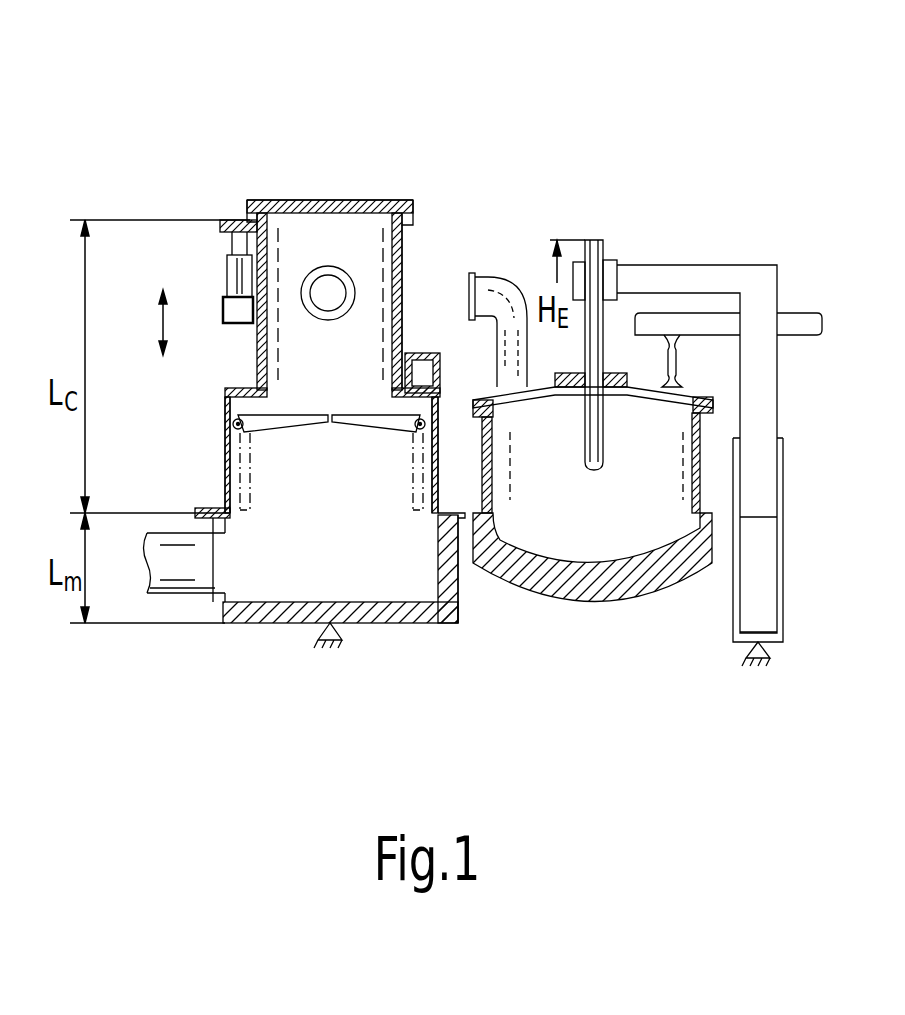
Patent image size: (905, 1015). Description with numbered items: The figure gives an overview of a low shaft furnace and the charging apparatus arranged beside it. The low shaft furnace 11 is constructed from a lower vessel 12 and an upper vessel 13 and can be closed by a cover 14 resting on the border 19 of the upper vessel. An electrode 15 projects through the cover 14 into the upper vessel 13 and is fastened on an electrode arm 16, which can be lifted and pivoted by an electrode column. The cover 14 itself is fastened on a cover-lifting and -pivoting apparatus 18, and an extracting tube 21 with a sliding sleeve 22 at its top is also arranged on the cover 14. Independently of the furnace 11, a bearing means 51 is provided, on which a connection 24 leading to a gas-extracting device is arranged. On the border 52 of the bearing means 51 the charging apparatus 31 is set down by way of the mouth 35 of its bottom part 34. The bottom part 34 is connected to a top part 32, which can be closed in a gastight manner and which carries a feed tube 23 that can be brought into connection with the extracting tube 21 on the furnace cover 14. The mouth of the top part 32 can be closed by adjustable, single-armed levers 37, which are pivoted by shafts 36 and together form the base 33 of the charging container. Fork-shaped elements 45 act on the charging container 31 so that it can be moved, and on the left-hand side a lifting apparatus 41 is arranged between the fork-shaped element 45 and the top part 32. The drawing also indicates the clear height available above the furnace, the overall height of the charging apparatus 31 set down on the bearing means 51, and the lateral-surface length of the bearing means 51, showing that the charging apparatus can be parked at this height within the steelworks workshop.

The low shaft furnace 11 is at (632, 512).
The lower vessel 12 is at (673, 590).
The upper vessel 13 is at (700, 453).
The cover 14 is at (710, 397).
The electrode 15 is at (603, 240).
The electrode arm 16 is at (670, 277).
The cover-lifting and -pivoting apparatus 18 is at (805, 323).
The border of upper furnace vessel 19 is at (710, 410).
The extracting tube 21 is at (510, 283).
The sliding sleeve 22 is at (474, 278).
The feed tube 23 is at (310, 268).
The bearing means connection 24 is at (180, 590).
The charging apparatus 31 is at (347, 363).
The top part of charging apparatus 32 is at (402, 255).
The base of the charging container 33 is at (393, 428).
The bottom part of charging apparatus 34 is at (435, 520).
The mouth region of bottom part 35 is at (460, 545).
The shaft 36 is at (236, 432).
The single-armed lever 37 is at (358, 200).
The lifting apparatus 41 is at (225, 222).
The fork-shaped element 45 is at (223, 298).
The bearing means 51 is at (245, 610).
The border of the bearing means 52 is at (207, 598).